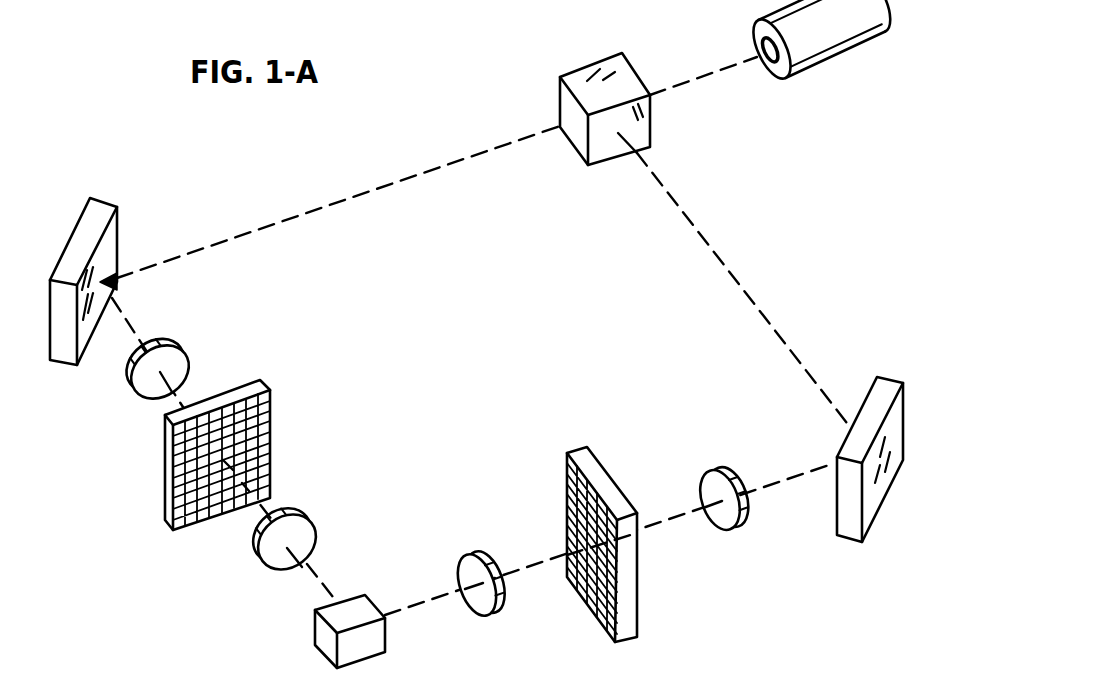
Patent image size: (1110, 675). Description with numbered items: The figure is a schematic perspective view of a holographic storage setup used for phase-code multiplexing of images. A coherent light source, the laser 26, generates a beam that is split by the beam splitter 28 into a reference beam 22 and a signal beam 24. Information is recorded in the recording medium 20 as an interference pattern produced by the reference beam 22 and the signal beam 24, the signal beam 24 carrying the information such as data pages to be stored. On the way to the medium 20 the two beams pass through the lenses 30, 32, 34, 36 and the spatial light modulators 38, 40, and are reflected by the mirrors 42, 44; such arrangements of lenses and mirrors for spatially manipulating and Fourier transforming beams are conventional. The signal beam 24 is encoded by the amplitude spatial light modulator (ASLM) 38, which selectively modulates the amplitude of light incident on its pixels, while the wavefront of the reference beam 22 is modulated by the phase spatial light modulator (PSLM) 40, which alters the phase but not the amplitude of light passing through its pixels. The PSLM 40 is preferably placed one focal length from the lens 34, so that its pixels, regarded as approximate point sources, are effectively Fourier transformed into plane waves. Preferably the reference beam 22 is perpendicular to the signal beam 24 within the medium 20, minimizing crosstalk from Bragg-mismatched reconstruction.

The recording medium 20 is at (337, 602).
The reference beam 22 is at (371, 188).
The signal beam 24 is at (740, 287).
The laser 26 is at (832, 63).
The beam splitter 28 is at (593, 64).
The lens 30 is at (710, 470).
The lens 32 is at (463, 548).
The lens 34 is at (312, 514).
The lens 36 is at (188, 347).
The amplitude spatial light modulator (ASLM) 38 is at (573, 447).
The phase spatial light modulator (PSLM) 40 is at (172, 525).
The mirror 42 is at (888, 377).
The mirror 44 is at (103, 198).